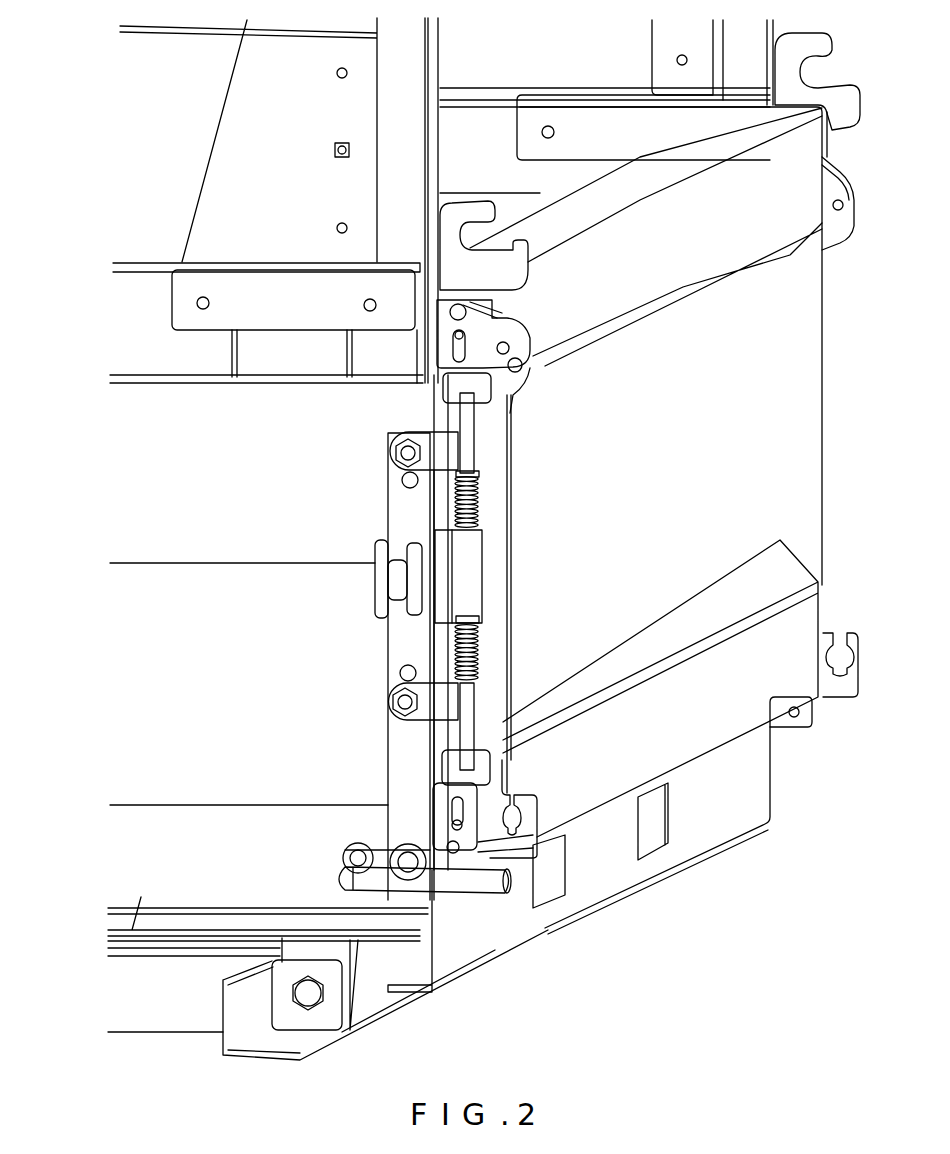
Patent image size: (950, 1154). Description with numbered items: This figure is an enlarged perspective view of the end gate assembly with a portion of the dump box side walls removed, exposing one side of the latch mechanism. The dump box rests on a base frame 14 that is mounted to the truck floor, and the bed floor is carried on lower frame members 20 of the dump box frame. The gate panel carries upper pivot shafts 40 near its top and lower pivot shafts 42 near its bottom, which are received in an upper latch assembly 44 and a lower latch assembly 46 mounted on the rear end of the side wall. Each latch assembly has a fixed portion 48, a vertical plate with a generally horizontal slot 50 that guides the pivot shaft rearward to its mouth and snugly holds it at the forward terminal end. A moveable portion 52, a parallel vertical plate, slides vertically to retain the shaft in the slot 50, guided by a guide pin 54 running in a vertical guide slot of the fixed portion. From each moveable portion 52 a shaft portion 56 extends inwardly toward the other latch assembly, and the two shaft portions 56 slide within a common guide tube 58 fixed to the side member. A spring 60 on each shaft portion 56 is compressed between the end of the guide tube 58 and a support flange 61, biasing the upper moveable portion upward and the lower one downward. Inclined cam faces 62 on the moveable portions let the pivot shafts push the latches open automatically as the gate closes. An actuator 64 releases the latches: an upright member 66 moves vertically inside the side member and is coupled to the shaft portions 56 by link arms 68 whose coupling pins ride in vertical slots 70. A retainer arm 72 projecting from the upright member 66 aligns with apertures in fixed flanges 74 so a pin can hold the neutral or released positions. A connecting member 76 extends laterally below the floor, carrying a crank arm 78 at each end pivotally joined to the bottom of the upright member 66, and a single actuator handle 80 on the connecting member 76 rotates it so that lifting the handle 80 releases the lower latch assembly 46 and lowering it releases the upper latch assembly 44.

The base frame 14 is at (157, 998).
The lower frame members 20 is at (110, 957).
The upper pivot shafts 40 is at (437, 305).
The lower pivot shafts 42 is at (638, 830).
The upper latch assemblies 44 is at (285, 412).
The lower latch assemblies 46 is at (255, 772).
The fixed portion 48 is at (490, 278).
The slot 50 is at (488, 306).
The moveable portion 52 is at (480, 385).
The guide pin 54 is at (464, 336).
The shaft portion 56 is at (470, 422).
The guide tube 58 is at (470, 556).
The spring 60 is at (470, 503).
The support flange 61 is at (470, 480).
The cam faces 62 is at (385, 262).
The actuator 64 is at (315, 865).
The upright member 66 is at (398, 643).
The link arms 68 is at (442, 443).
The vertical slots 70 is at (402, 477).
The retainer arm 72 is at (376, 570).
The fixed flanges 74 is at (380, 547).
The connecting member 76 is at (345, 872).
The crank arm 78 is at (455, 880).
The actuator handle 80 is at (452, 878).